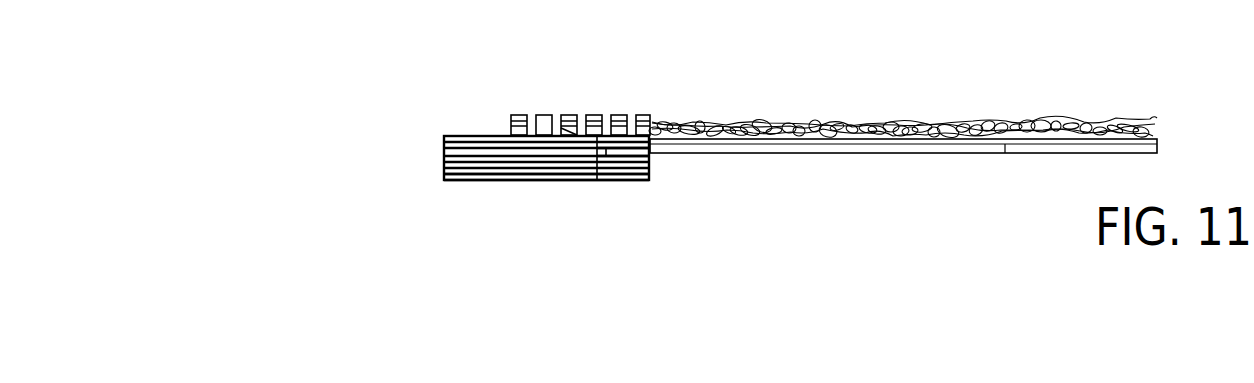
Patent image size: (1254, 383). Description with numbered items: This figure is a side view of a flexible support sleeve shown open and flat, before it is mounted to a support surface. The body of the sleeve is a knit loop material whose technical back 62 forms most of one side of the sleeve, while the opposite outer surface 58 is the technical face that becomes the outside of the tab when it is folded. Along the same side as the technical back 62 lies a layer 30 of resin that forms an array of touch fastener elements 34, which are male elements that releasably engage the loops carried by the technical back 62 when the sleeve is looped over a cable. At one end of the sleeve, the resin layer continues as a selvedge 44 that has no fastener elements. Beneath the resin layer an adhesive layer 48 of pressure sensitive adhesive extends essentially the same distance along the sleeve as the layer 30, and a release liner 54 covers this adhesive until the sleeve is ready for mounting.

The layer of resin 30 is at (571, 75).
The touch fastener elements 34 is at (570, 115).
The selvedge 44 is at (466, 136).
The adhesive layer 48 is at (650, 165).
The release liner 54 is at (490, 183).
The outer surface 58 is at (917, 154).
The technical back 62 is at (950, 130).